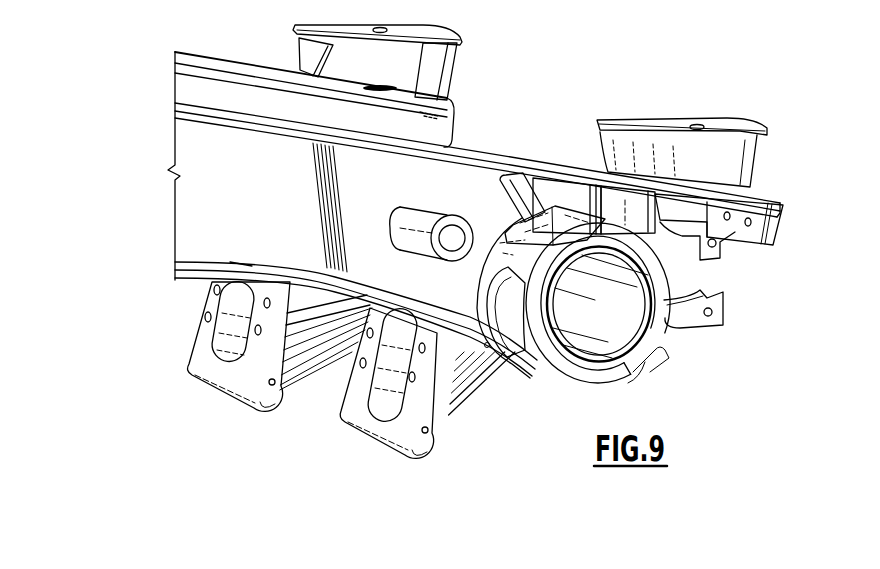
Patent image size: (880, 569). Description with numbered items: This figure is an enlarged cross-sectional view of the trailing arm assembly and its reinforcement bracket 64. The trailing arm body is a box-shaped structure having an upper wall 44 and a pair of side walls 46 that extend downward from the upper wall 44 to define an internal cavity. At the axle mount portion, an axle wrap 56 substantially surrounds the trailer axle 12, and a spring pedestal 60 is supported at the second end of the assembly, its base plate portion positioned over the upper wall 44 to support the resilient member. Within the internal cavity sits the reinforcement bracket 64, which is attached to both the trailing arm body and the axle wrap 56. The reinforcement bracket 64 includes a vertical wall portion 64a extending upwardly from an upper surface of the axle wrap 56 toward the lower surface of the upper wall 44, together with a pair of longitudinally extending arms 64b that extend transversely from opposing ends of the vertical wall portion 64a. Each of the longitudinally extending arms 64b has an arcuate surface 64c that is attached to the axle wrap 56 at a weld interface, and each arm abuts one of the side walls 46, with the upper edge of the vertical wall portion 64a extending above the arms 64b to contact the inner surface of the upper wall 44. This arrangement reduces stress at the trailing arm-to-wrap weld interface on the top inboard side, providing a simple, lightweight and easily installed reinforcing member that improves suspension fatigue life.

The trailer axle 12 is at (664, 300).
The upper wall 44 is at (496, 153).
The side walls 46 is at (304, 226).
The axle wrap 56 is at (630, 378).
The spring pedestal 60 is at (727, 170).
The reinforcement bracket 64 is at (658, 208).
The vertical wall portion 64a is at (626, 198).
The longitudinally extending arms 64b is at (573, 195).
The arcuate surface 64c is at (517, 210).